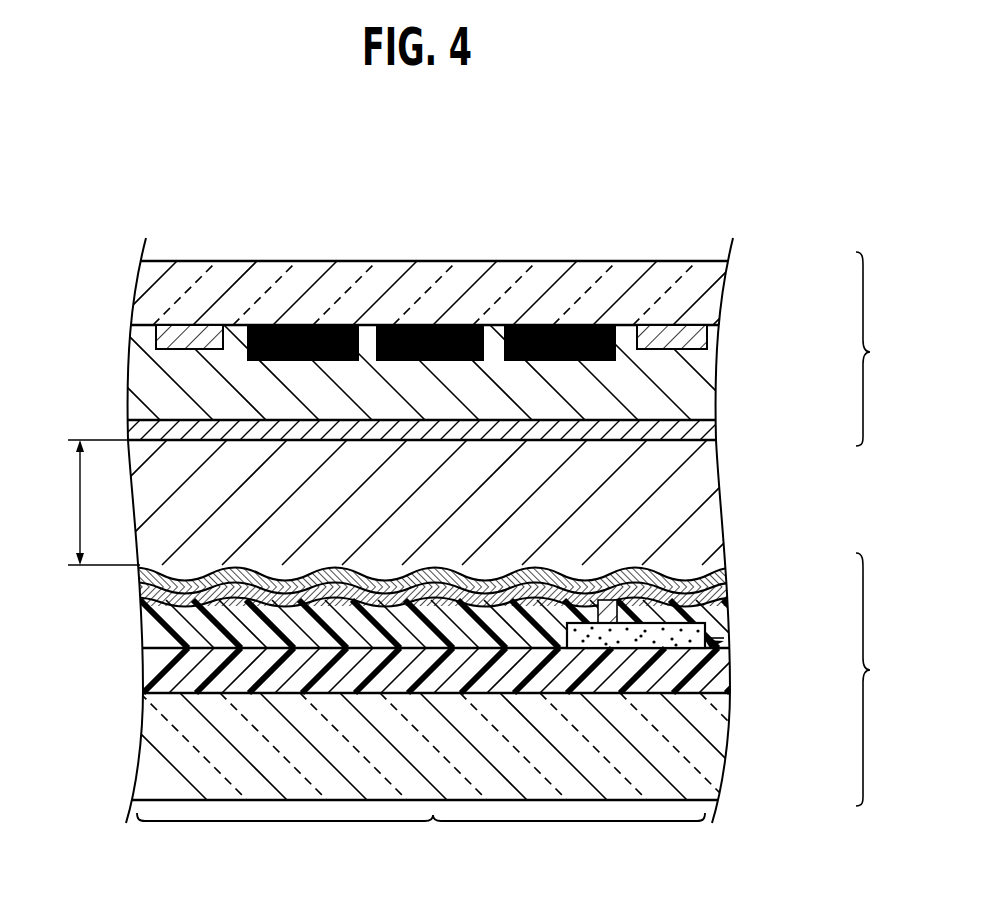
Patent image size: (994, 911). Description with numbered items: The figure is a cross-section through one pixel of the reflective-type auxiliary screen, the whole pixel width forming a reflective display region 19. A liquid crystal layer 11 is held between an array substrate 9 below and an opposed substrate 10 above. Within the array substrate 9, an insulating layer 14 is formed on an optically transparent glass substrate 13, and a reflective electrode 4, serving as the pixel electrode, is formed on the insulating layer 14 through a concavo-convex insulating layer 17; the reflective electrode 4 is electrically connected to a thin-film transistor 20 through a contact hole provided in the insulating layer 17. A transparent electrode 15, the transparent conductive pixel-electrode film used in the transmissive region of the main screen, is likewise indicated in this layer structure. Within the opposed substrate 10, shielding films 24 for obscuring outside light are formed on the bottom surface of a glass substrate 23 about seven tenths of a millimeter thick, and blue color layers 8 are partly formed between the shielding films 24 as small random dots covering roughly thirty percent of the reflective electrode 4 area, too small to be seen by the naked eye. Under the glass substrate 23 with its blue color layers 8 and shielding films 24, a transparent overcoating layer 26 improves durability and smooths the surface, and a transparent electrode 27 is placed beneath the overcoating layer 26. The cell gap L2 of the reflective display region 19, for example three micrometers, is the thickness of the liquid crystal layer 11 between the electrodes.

The glass substrate 23 is at (713, 292).
The shielding films 24 is at (713, 332).
The transparent overcoating layer 26 is at (713, 372).
The blue color layers 8 is at (718, 382).
The transparent electrode 27 is at (715, 424).
The opposed substrate 10 is at (882, 349).
The liquid crystal layer 11 is at (704, 508).
The reflective electrode 4 is at (730, 570).
The transparent electrode 15 is at (730, 593).
The concavo-convex insulating layer 17 is at (730, 622).
The thin-film transistor 20 is at (730, 645).
The insulating layer 14 is at (730, 673).
The glass substrate 13 is at (728, 767).
The array substrate 9 is at (878, 679).
The reflective display region 19 is at (421, 842).
The cell gap L2 is at (90, 502).